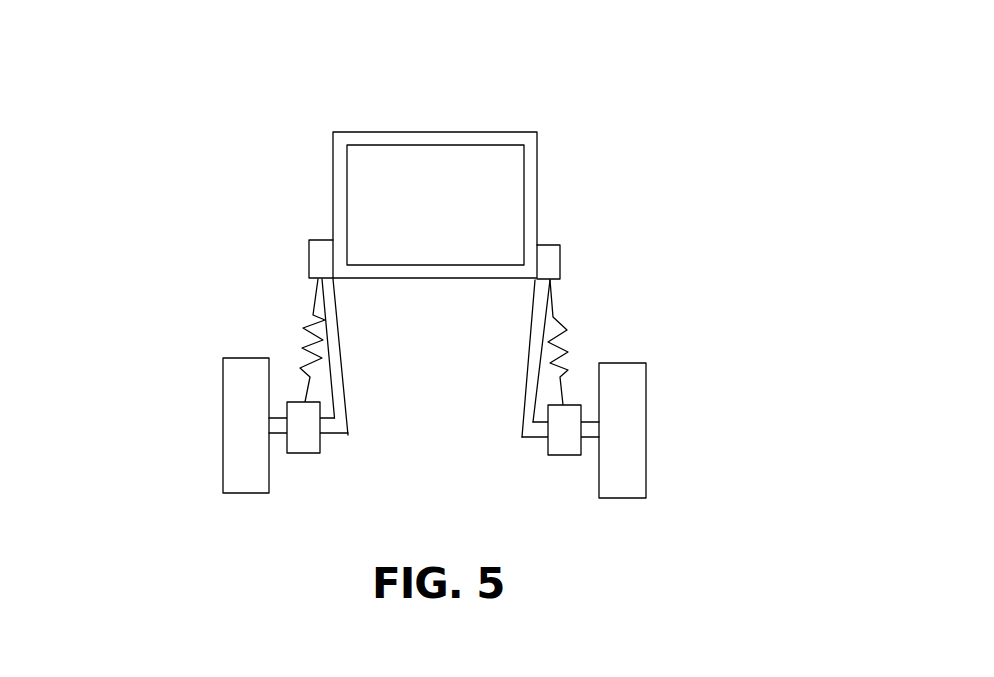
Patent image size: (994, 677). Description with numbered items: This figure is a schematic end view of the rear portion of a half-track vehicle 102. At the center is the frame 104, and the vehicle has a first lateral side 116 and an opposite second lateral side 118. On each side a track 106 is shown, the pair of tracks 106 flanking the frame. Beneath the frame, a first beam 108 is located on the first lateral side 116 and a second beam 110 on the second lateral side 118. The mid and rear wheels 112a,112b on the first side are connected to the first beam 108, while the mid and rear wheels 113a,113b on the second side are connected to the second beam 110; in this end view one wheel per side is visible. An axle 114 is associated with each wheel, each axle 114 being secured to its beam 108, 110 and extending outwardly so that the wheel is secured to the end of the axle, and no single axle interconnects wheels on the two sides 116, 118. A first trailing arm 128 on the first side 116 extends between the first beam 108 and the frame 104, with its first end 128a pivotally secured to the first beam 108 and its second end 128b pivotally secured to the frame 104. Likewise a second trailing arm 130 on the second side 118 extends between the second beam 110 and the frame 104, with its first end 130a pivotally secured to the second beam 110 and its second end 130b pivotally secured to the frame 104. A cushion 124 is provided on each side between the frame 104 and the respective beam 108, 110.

The half-track vehicle 102 is at (518, 104).
The frame 104 is at (537, 162).
The tracks 106 is at (225, 358).
The first beam 108 is at (310, 453).
The second beam 110 is at (563, 455).
The mid wheel and rear wheel on first lateral side 112a,112b is at (223, 437).
The mid wheel and rear wheel on second lateral side 113a,113b is at (646, 427).
The axle 114 is at (272, 437).
The first lateral side 116 is at (276, 249).
The second lateral side 118 is at (593, 239).
The cushion 124 is at (310, 325).
The first trailing arm 128 is at (343, 380).
The first end of first trailing arm 128a is at (343, 437).
The second end of first trailing arm 128b is at (335, 283).
The second trailing arm 130 is at (527, 358).
The first end of second trailing arm 130a is at (533, 440).
The second end of second trailing arm 130b is at (532, 288).